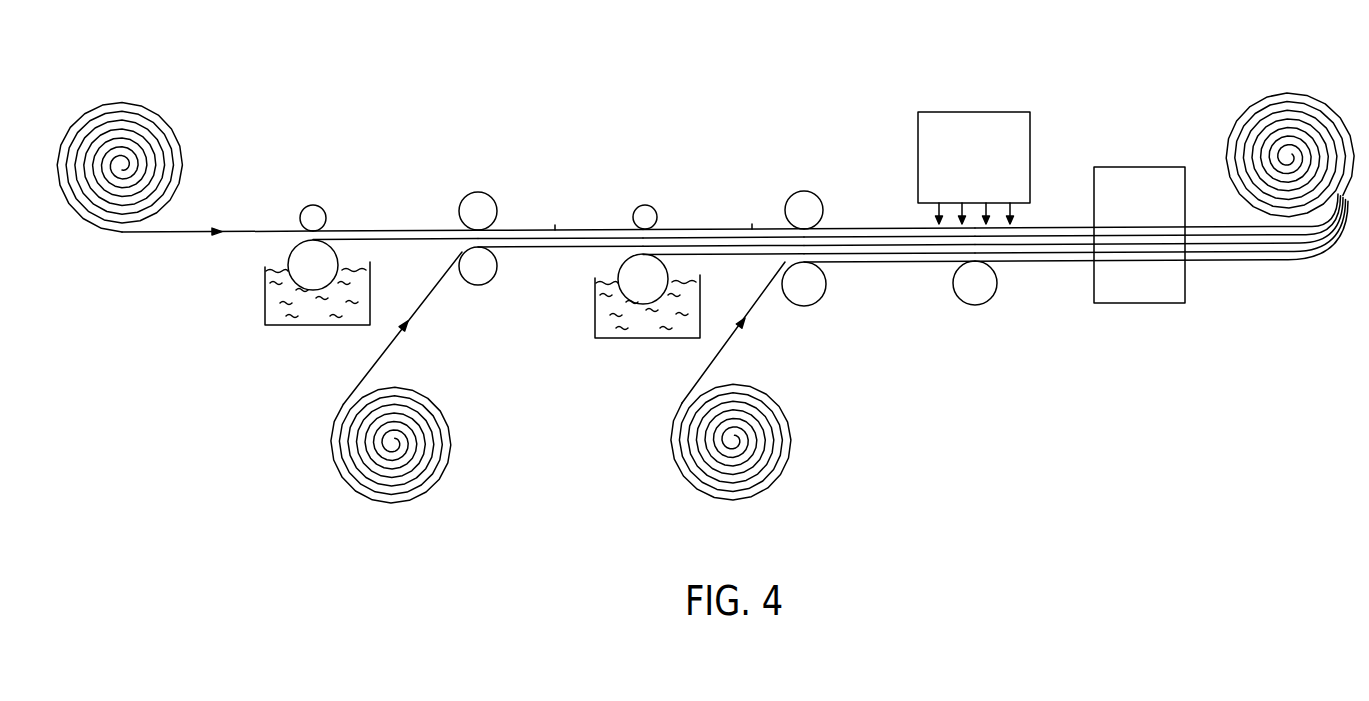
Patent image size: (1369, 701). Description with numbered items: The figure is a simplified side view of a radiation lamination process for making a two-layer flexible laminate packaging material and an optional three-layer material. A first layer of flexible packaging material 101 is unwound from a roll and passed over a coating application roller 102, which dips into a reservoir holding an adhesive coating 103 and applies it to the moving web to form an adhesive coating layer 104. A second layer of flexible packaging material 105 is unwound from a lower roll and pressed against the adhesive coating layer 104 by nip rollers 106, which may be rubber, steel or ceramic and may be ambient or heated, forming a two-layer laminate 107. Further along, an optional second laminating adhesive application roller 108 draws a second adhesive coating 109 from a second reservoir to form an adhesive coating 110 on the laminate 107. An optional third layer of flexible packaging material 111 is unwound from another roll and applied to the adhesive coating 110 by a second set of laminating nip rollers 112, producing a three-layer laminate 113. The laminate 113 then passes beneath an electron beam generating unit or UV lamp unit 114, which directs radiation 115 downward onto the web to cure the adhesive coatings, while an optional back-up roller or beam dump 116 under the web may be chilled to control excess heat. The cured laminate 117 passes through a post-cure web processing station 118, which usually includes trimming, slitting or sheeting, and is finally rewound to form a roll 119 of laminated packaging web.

The first layer of flexible packaging material 101 is at (128, 118).
The coating application roller 102 is at (310, 280).
The adhesive coating 103 is at (270, 303).
The adhesive coating layer 104 is at (417, 243).
The second layer of flexible packaging material 105 is at (372, 488).
The nip rollers 106 is at (477, 200).
The 2-layer laminate 107 is at (565, 248).
The second laminating adhesive application roller 108 is at (637, 293).
The second adhesive coating 109 is at (597, 327).
The adhesive coating 110 is at (740, 257).
The third layer of flexible packaging material 111 is at (720, 488).
The second set of laminating nip rollers 112 is at (803, 197).
The 3-layer laminate 113 is at (900, 262).
The electron beam generating unit or UV lamp unit 114 is at (998, 120).
The curing radiation 115 is at (1022, 214).
The back-up roller or beam dump 116 is at (977, 298).
The cured laminate 117 is at (1060, 228).
The processing station 118 is at (1120, 293).
The roll 119 is at (1285, 103).